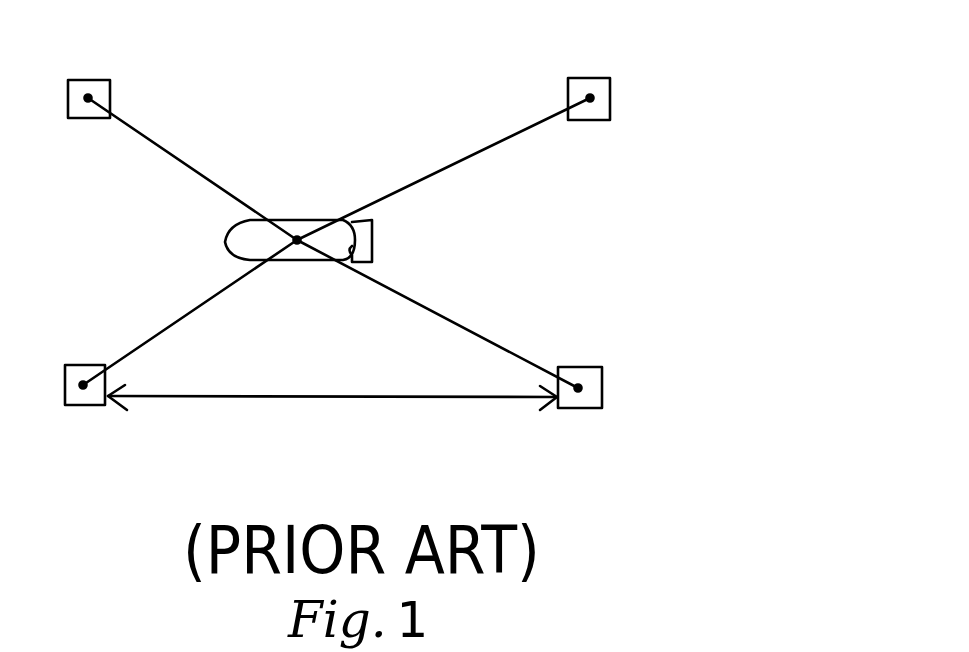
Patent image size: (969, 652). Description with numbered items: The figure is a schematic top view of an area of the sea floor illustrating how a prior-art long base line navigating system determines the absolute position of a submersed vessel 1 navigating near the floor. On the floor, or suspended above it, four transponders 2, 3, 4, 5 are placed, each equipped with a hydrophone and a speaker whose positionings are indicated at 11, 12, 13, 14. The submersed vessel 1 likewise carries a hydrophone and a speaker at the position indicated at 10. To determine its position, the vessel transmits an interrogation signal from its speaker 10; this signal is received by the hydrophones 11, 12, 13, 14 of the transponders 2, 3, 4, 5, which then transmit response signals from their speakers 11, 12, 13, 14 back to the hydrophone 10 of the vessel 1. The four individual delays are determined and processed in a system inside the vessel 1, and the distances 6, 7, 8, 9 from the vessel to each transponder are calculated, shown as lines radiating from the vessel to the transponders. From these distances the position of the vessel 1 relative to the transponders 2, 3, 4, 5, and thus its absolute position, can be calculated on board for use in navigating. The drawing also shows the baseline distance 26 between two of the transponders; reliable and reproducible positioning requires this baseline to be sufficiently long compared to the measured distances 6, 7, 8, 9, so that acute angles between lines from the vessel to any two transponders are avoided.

The submersed vessel 1 is at (293, 219).
The transponder 2 is at (85, 80).
The transponder 3 is at (586, 78).
The transponder 4 is at (75, 365).
The transponder 5 is at (585, 367).
The distance 6 is at (190, 160).
The distance 7 is at (185, 312).
The distance 8 is at (446, 168).
The distance 9 is at (455, 320).
The hydrophone and speaker of the vessel 10 is at (296, 262).
The hydrophone and speaker of the transponder 11 is at (92, 98).
The hydrophone and speaker of the transponder 12 is at (84, 389).
The hydrophone and speaker of the transponder 13 is at (579, 392).
The hydrophone and speaker of the transponder 14 is at (591, 101).
The baseline distance 26 is at (352, 398).